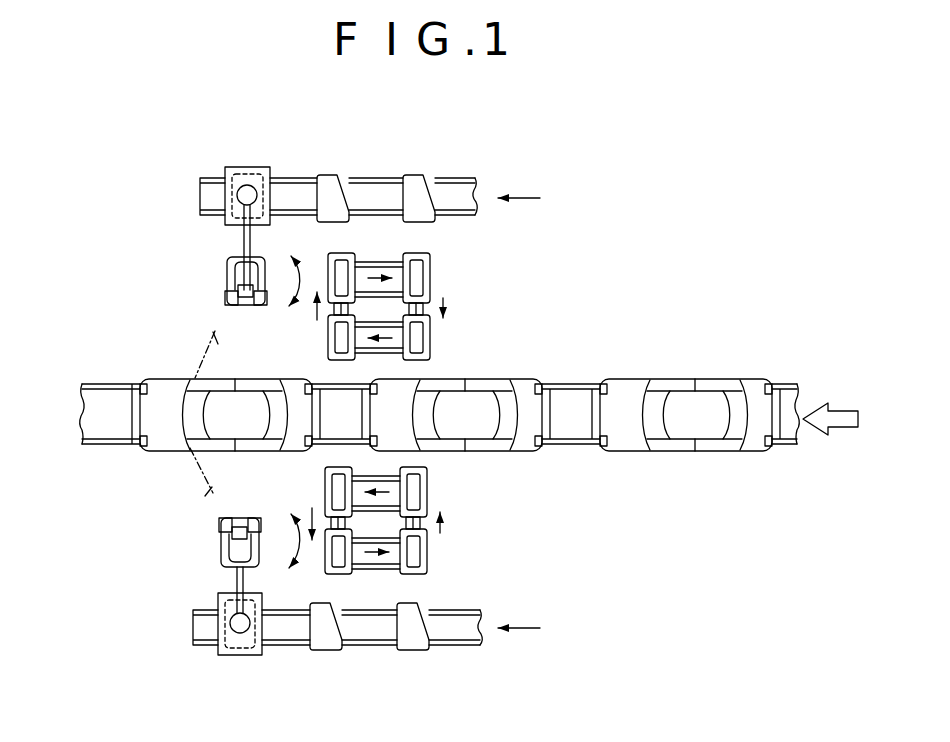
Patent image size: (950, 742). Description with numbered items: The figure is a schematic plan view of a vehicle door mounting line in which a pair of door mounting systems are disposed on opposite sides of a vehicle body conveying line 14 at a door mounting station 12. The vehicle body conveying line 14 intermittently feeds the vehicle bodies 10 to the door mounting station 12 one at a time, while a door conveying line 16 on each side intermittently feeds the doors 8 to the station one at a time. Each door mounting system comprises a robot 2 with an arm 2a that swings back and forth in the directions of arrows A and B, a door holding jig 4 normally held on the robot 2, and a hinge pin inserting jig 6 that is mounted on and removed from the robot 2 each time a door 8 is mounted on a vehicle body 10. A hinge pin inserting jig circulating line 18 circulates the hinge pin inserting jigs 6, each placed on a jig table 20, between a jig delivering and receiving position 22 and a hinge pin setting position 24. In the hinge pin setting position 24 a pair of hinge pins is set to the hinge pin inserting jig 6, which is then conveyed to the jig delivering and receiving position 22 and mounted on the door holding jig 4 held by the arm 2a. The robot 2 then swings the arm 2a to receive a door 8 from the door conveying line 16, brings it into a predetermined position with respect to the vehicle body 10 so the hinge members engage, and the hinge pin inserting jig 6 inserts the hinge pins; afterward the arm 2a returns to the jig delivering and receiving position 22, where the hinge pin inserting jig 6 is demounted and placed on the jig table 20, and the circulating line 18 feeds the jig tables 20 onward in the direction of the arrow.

The robot 2 is at (226, 278).
The arm 2a is at (242, 240).
The door holding jig 4 is at (253, 166).
The hinge pin inserting jig 6 is at (408, 413).
The door 8 is at (232, 172).
The vehicle body 10 is at (150, 450).
The door mounting station 12 is at (135, 256).
The vehicle body conveying line 14 is at (789, 385).
The door conveying line 16 is at (458, 177).
The hinge pin inserting jig circulating line 18 is at (388, 258).
The jig table 20 is at (430, 332).
The jig delivering and receiving position 22 is at (342, 256).
The hinge pin setting position 24 is at (425, 253).